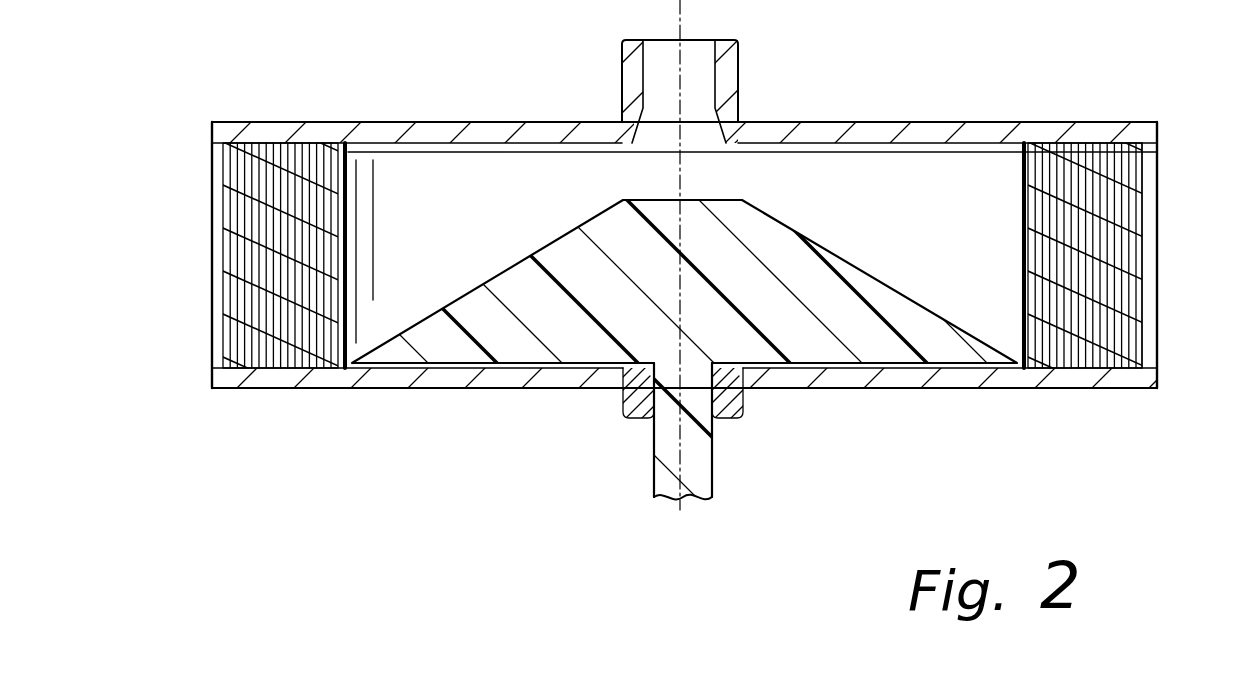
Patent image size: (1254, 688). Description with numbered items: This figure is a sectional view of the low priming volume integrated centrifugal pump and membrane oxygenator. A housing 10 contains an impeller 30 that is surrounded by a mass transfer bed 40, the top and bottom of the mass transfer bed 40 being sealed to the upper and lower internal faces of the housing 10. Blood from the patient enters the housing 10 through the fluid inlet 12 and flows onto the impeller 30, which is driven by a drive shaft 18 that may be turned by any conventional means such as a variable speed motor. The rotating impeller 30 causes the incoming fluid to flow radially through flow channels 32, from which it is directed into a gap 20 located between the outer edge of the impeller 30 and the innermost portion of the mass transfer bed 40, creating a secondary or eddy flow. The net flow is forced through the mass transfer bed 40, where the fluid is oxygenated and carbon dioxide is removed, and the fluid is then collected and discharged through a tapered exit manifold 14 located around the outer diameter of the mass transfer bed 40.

The housing 10 is at (272, 122).
The fluid inlet 12 is at (657, 80).
The tapered exit manifold 14 is at (1150, 207).
The drive shaft 18 is at (713, 473).
The gap 20 is at (348, 368).
The impeller 30 is at (570, 327).
The flow channels 32 is at (414, 251).
The mass transfer bed 40 is at (257, 242).